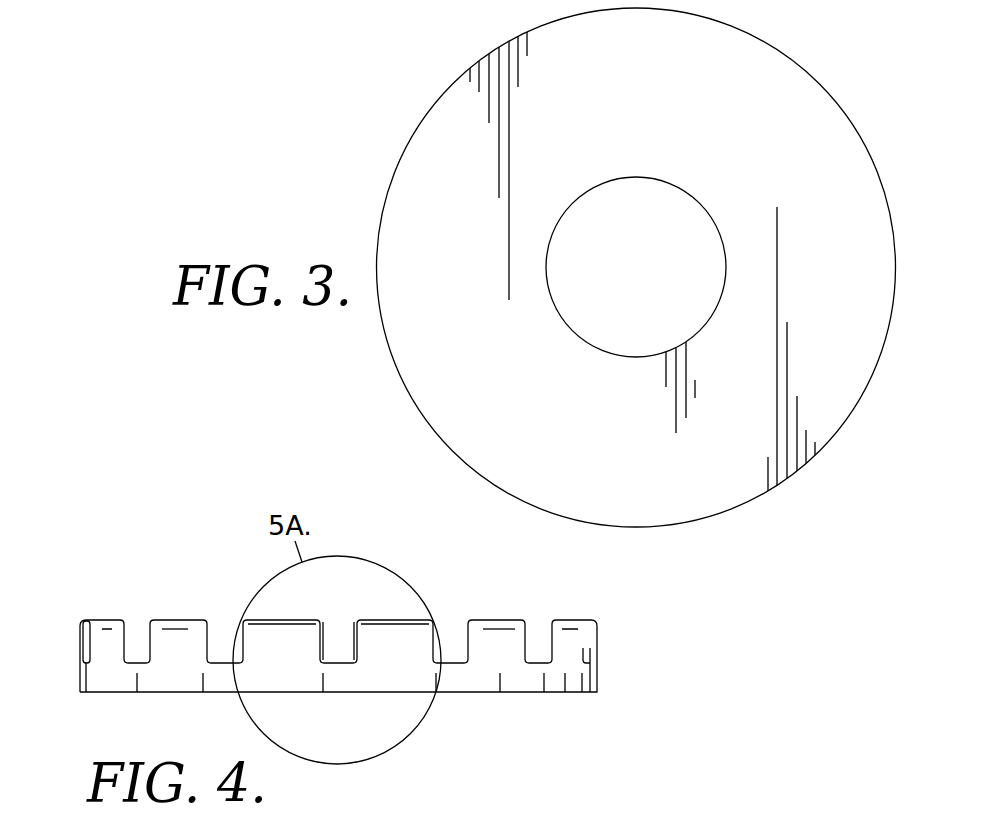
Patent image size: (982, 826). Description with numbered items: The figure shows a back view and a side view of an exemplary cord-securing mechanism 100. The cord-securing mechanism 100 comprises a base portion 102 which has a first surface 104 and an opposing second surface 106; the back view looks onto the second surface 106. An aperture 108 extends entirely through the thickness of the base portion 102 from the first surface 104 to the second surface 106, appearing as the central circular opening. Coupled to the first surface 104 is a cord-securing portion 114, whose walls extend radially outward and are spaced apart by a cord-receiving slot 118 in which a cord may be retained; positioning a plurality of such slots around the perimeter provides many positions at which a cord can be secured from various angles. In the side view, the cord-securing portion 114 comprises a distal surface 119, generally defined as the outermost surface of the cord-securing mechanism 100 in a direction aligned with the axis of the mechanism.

In FIG. 3, the cord-securing mechanism 100 is at (436, 67).
In FIG. 4, the cord-securing mechanism 100 is at (96, 538).
In FIG. 4, the base portion 102 is at (552, 680).
In FIG. 4, the first surface 104 is at (337, 657).
In FIG. 3, the second surface 106 is at (725, 110).
In FIG. 4, the second surface 106 is at (470, 697).
In FIG. 3, the aperture 108 is at (633, 323).
In FIG. 4, the cord-securing portion 114 is at (102, 622).
In FIG. 4, the cord-receiving slot 118 is at (136, 662).
In FIG. 4, the distal surface 119 is at (183, 619).